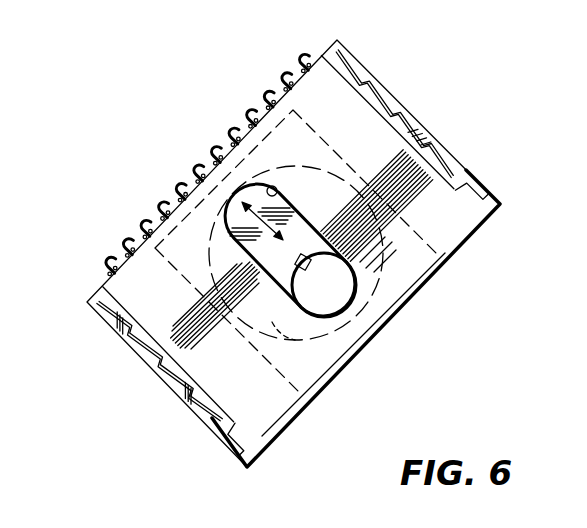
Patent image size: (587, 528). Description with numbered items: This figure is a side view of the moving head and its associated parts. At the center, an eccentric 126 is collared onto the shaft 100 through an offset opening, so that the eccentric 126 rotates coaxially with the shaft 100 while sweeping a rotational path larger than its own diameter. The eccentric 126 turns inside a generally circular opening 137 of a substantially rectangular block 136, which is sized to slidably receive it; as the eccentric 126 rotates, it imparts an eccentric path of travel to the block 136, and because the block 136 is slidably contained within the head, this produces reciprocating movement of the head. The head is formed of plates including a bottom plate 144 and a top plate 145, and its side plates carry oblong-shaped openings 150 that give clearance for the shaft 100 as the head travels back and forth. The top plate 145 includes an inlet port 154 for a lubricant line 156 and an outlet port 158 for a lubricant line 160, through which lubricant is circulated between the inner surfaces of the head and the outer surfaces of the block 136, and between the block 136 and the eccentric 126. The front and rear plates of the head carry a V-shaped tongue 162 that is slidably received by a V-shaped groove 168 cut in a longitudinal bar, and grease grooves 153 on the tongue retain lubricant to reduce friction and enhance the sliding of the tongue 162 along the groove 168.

The shaft 100 is at (340, 299).
The eccentric 126 is at (226, 212).
The block 136 is at (411, 268).
The circular opening 137 is at (290, 343).
The bottom plate 144 is at (446, 261).
The top plate 145 is at (103, 283).
The oblong-shaped opening 150 is at (270, 186).
The grease groove 153 is at (394, 103).
The inlet port 154 is at (170, 198).
The lubricant line 156 is at (140, 236).
The outlet port 158 is at (246, 128).
The lubricant line 160 is at (260, 103).
The V-shaped tongue 162 is at (366, 74).
The V-shaped groove 168 is at (227, 436).